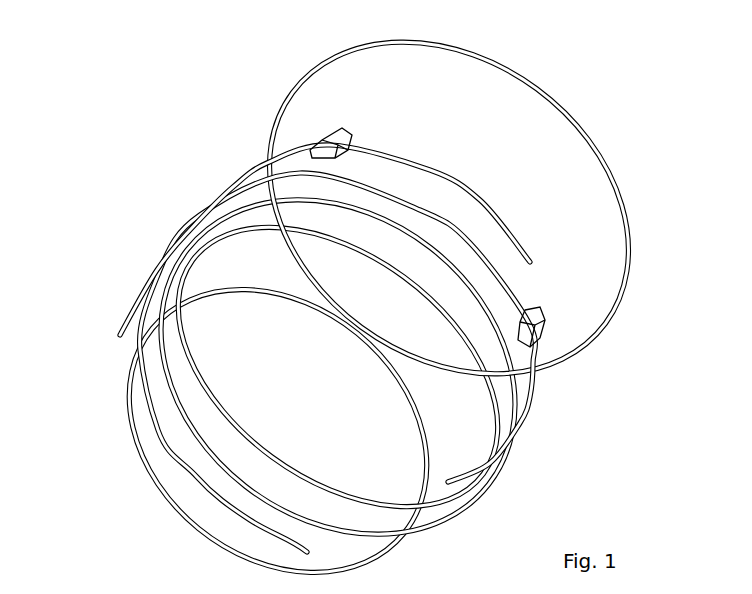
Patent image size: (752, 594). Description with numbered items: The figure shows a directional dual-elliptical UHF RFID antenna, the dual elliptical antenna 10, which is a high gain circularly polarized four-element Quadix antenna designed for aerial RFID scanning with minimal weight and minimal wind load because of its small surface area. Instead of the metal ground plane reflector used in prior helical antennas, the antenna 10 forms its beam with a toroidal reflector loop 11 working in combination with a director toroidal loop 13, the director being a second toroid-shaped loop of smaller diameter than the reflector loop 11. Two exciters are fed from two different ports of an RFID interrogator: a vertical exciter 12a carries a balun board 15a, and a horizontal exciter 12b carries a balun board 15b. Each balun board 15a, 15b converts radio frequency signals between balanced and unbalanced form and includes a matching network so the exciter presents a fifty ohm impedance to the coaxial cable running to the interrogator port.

The dual elliptical antenna 10 is at (268, 66).
The toroidal reflector loop 11 is at (568, 120).
The vertical exciter 12a is at (530, 258).
The horizontal exciter 12b is at (546, 380).
The director toroidal loop 13 is at (133, 453).
The balun board 15a is at (322, 138).
The balun board 15b is at (545, 333).